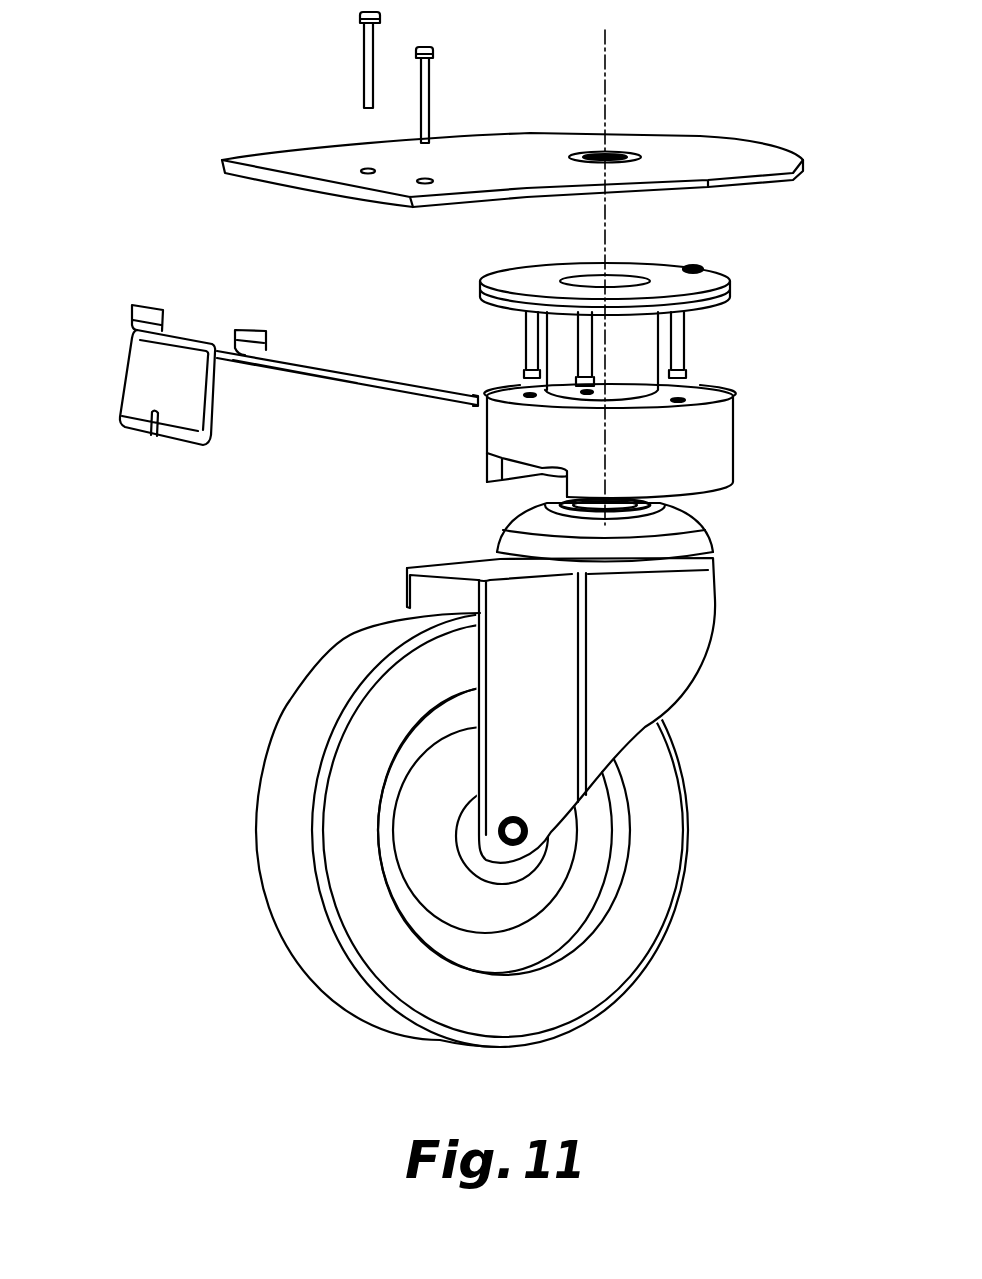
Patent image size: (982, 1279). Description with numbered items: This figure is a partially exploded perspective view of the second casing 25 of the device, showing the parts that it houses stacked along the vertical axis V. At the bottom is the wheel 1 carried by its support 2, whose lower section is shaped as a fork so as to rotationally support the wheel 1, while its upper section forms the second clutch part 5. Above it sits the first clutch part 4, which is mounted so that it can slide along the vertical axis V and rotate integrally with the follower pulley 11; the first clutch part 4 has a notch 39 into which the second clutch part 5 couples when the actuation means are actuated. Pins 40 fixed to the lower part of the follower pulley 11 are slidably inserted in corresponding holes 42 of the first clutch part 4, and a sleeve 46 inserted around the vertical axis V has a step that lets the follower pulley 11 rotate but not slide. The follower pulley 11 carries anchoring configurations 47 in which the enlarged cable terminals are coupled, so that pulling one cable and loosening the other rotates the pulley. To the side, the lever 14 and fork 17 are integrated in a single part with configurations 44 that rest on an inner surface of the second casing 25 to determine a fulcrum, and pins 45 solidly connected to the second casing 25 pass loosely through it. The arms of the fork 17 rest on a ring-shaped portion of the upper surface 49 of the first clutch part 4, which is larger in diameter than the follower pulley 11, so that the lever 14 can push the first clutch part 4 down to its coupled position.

The wheel 1 is at (277, 863).
The support 2 is at (663, 685).
The first clutch part 4 is at (717, 462).
The second clutch part 5 is at (440, 562).
The follower pulley 11 is at (537, 275).
The lever 14 is at (133, 407).
The fork 17 is at (325, 368).
The second casing 25 is at (303, 163).
The notch 39 is at (487, 452).
The pins 40 is at (680, 352).
The holes 42 is at (705, 392).
The configurations 44 is at (150, 300).
The pins 45 is at (423, 88).
The sleeve 46 is at (565, 335).
The anchoring configurations 47 is at (690, 266).
The upper surface 49 is at (498, 380).
The vertical axis V is at (607, 85).